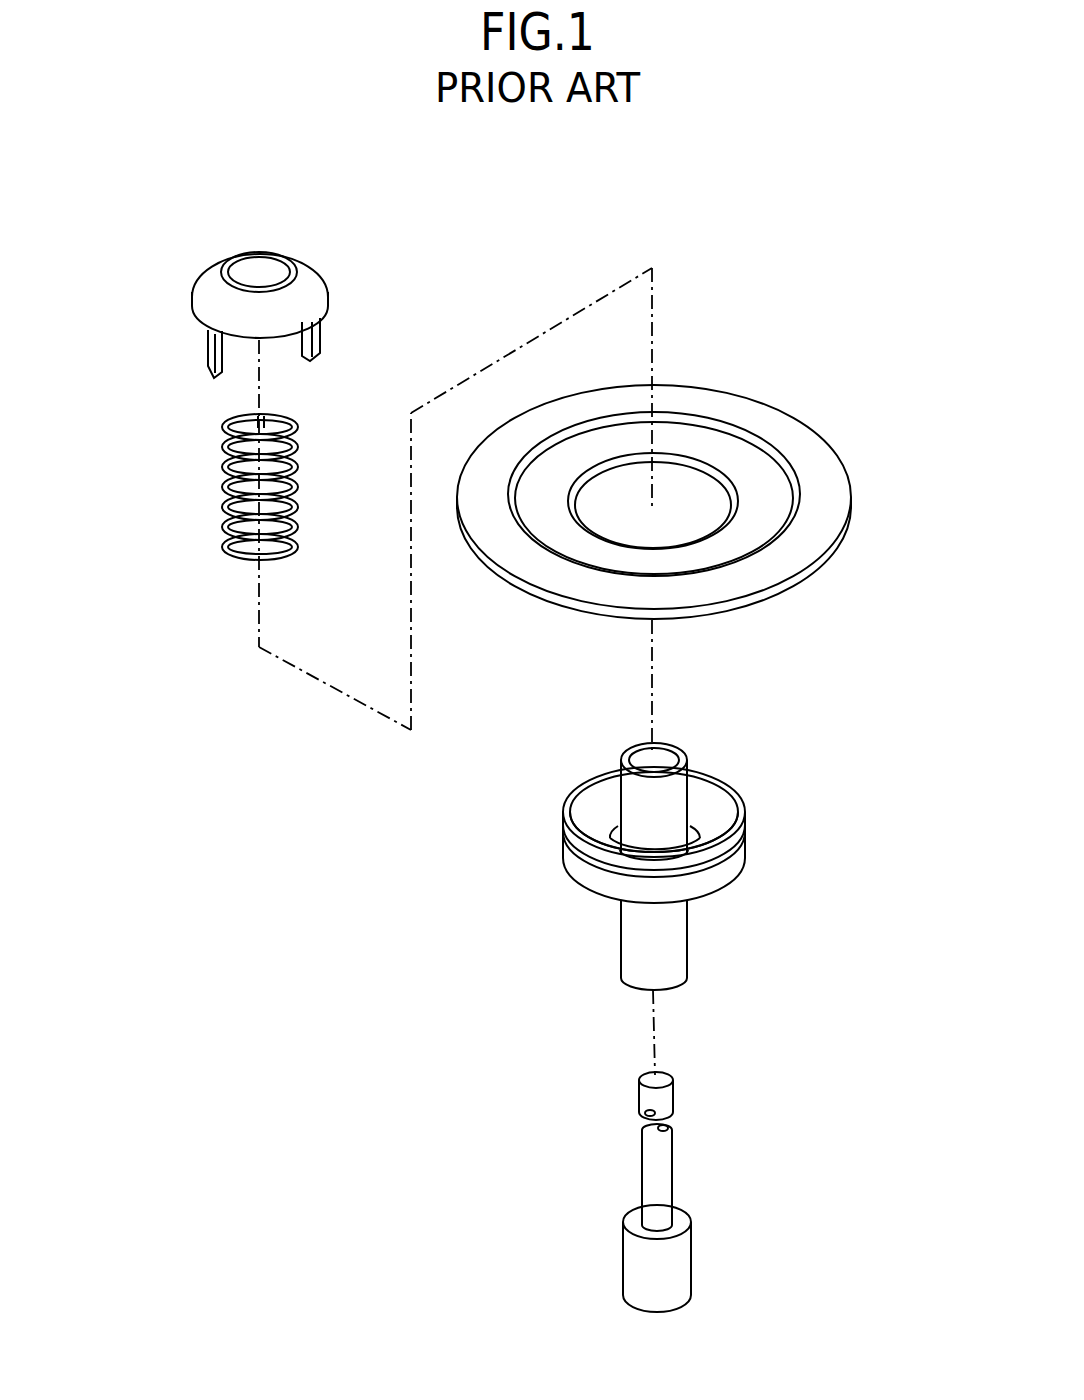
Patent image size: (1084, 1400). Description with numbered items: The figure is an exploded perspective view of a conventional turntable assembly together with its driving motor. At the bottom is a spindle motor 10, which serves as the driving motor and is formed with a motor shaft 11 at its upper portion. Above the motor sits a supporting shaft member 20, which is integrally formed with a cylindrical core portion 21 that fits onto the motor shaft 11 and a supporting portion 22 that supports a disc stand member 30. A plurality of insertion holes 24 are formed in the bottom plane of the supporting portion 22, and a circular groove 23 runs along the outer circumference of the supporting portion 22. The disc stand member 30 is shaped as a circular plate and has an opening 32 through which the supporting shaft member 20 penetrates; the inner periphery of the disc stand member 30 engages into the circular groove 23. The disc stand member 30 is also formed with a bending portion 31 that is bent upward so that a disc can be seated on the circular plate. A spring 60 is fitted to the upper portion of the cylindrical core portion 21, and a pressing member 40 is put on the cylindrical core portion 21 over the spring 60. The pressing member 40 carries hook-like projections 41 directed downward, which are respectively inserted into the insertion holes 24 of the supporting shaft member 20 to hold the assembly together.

The spindle motor 10 is at (700, 1270).
The motor shaft 11 is at (648, 1170).
The supporting shaft member 20 is at (702, 758).
The cylindrical core portion 21 is at (637, 745).
The supporting portion 22 is at (712, 830).
The circular groove 23 is at (578, 855).
The insertion holes 24 is at (614, 800).
The disc stand member 30 is at (700, 370).
The bending portion 31 is at (573, 430).
The opening 32 is at (688, 530).
The pressing member 40 is at (205, 266).
The hook-like projections 41 is at (320, 340).
The spring 60 is at (236, 560).